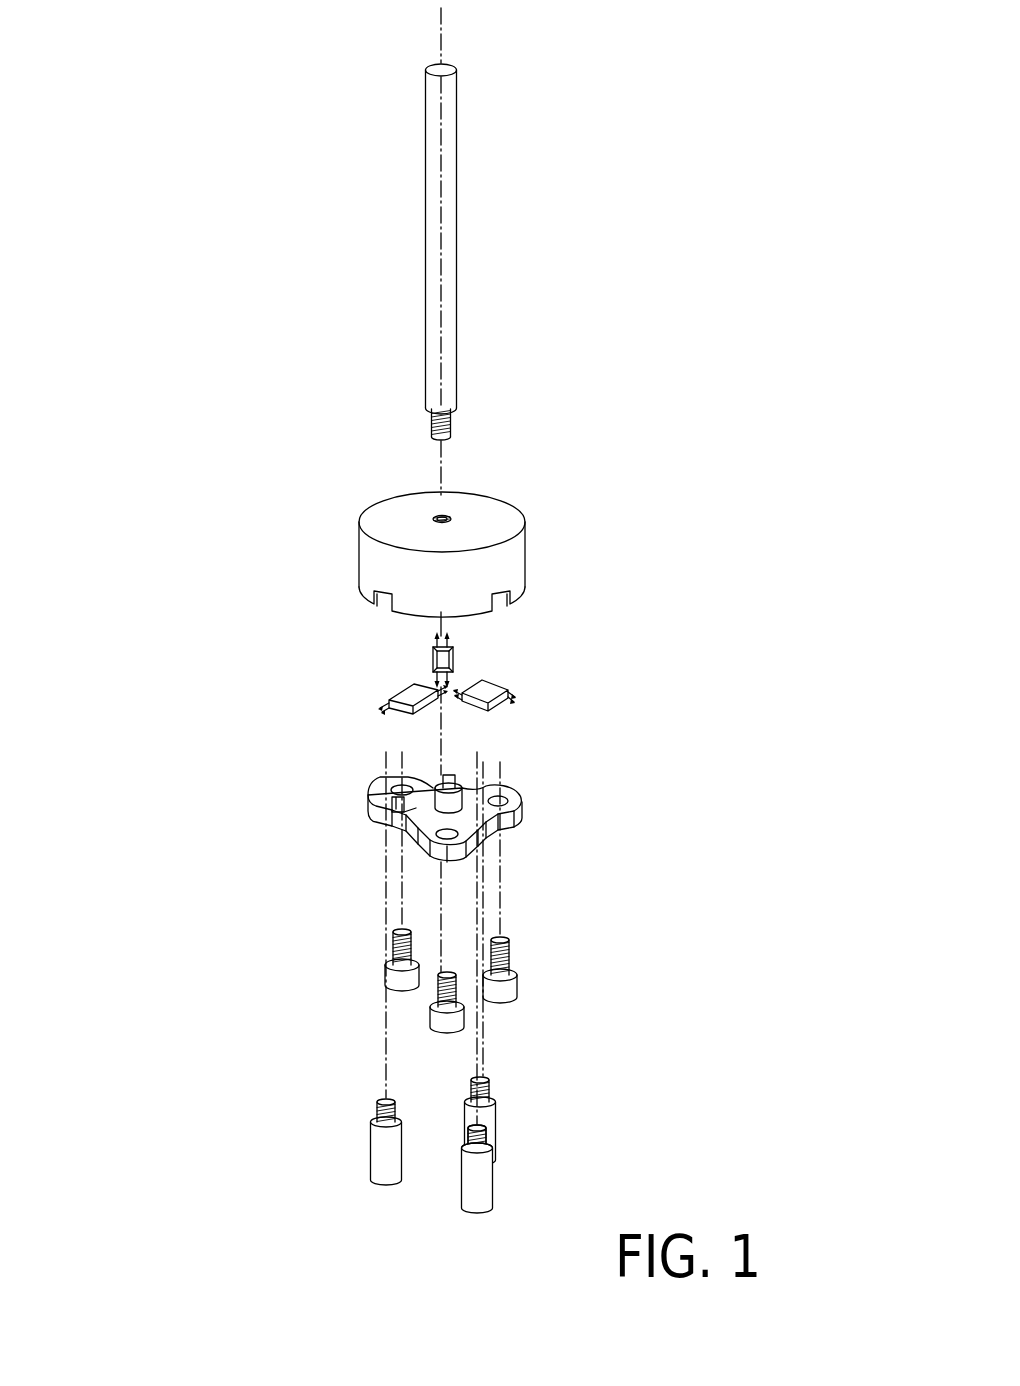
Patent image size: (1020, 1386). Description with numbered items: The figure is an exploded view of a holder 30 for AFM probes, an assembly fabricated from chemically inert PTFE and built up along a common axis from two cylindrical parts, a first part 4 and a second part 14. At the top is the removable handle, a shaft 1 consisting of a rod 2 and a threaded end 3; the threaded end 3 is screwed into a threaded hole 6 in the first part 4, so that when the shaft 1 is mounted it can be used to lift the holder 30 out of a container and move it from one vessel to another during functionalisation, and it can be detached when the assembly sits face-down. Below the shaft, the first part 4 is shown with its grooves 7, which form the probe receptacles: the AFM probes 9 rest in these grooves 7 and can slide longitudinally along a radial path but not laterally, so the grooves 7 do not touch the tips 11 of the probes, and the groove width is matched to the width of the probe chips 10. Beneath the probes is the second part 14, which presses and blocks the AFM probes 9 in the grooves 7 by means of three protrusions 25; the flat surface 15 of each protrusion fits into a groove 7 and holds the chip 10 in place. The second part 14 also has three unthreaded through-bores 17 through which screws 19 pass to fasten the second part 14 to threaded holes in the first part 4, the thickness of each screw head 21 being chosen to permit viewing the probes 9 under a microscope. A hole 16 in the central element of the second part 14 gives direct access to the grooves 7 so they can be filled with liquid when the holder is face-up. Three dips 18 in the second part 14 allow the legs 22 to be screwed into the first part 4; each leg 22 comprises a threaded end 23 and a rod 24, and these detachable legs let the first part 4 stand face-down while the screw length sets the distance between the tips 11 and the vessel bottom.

The shaft 1 is at (381, 149).
The rod 2 is at (448, 213).
The threaded end 3 is at (452, 431).
The first part of the holder 4 is at (354, 534).
The threaded hole 6 is at (438, 515).
The grooves 7 is at (374, 601).
The AFM probes 9 is at (502, 682).
The chips 10 is at (466, 697).
The tips 11 is at (478, 697).
The second part of the holder 14 is at (510, 834).
The flat surface 15 is at (490, 808).
The hole 16 is at (465, 786).
The unthreaded through-bores 17 is at (398, 787).
The dips 18 is at (395, 803).
The screws 19 is at (386, 954).
The head 21 is at (513, 992).
The legs 22 is at (367, 1147).
The threaded end 23 is at (376, 1110).
The rod 24 is at (383, 1175).
The protrusions 25 is at (398, 813).
The holder 30 is at (236, 650).